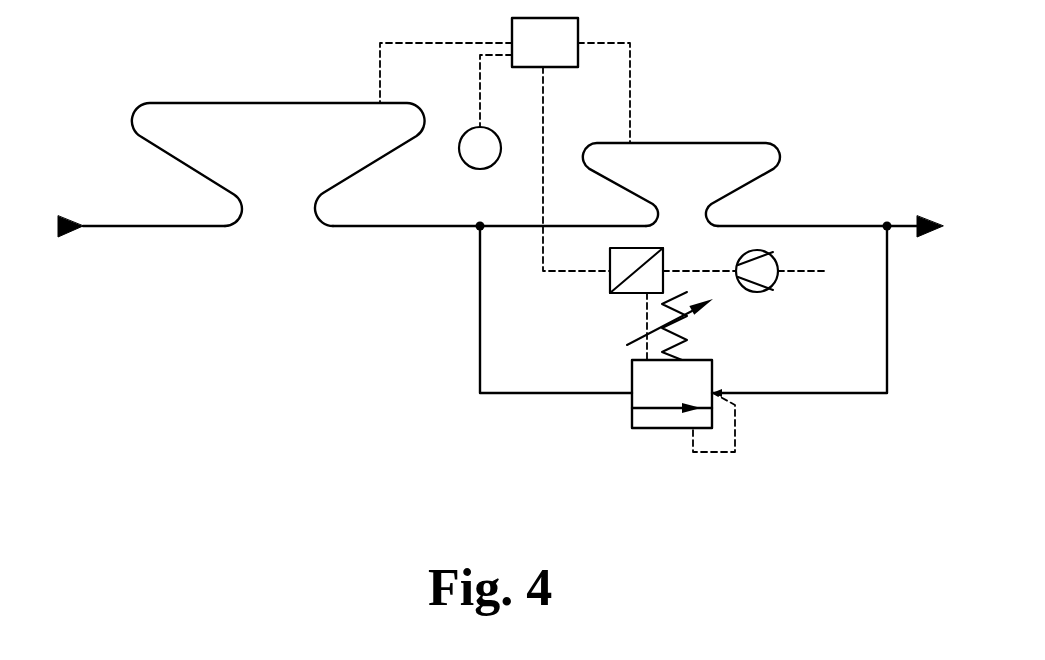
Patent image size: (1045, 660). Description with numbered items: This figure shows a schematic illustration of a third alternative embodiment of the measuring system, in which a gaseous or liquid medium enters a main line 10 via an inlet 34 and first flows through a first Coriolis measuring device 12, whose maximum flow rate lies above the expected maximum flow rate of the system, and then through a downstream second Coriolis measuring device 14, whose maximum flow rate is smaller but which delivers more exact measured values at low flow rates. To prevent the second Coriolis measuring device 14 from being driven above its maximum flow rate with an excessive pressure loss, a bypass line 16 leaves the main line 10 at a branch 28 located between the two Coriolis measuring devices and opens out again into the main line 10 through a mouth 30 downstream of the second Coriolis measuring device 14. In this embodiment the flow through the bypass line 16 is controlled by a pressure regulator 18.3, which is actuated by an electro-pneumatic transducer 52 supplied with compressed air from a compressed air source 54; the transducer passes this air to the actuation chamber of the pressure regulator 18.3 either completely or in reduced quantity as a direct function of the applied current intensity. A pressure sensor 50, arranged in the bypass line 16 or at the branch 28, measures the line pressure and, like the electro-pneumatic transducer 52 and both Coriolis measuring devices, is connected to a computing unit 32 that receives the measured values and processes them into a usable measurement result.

The main line 10 is at (129, 228).
The first Coriolis measuring device 12 is at (248, 103).
The second Coriolis measuring device 14 is at (658, 143).
The bypass line 16 is at (480, 310).
The pressure regulator 18.3 is at (672, 430).
The branch 28 is at (478, 229).
The mouth 30 is at (887, 222).
The computing unit 32 is at (505, 144).
The inlet 34 is at (70, 213).
The pressure sensor 50 is at (467, 163).
The electro-pneumatic transducer 52 is at (618, 293).
The compressed air source 54 is at (757, 292).